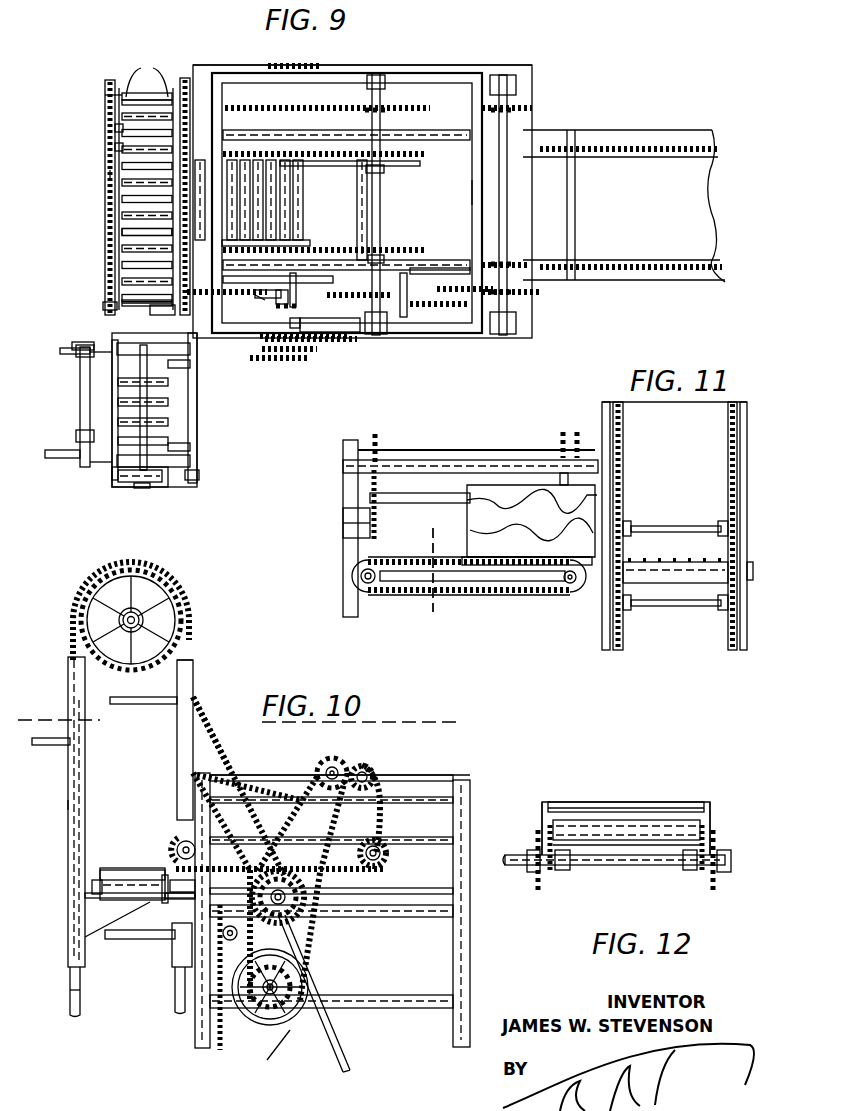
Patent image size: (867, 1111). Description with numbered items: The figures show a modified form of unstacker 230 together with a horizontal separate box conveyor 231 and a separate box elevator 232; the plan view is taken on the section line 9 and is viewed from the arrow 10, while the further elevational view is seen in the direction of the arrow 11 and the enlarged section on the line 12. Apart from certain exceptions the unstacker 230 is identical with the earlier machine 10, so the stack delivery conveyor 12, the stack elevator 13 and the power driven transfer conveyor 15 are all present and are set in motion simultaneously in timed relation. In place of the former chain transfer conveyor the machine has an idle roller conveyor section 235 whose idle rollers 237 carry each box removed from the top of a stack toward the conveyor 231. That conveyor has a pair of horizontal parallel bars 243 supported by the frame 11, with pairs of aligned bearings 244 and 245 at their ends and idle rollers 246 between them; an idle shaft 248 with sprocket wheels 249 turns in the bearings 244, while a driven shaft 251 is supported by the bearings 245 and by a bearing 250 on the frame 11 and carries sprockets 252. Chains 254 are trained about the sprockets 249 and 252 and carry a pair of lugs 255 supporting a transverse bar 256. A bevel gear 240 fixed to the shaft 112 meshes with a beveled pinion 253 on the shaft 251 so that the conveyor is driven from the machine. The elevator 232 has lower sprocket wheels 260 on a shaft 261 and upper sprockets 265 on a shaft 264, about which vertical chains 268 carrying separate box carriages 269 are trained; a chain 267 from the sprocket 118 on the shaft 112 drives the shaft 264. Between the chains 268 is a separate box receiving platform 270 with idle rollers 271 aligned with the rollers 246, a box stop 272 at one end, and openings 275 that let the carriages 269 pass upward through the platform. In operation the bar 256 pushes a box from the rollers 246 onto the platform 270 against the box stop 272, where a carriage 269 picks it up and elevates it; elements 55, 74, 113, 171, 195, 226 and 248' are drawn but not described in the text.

In FIG. 10, the section line 9— 9 is at (38, 717).
In FIG. 9, the unstacker machine 10 is at (272, 497).
In FIG. 9, the frame 11 is at (472, 192).
In FIG. 10, the frame 11 is at (62, 804).
In FIG. 9, the stack delivery conveyor 12 is at (622, 259).
In FIG. 11, the stack delivery conveyor 12 is at (430, 543).
In FIG. 9, the stack elevator 13 is at (386, 248).
In FIG. 10, the stack elevator 13 is at (348, 1041).
In FIG. 9, the transfer conveyor 15 is at (330, 104).
In FIG. 11, the transfer conveyor 15 is at (383, 434).
In FIG. 10, the transfer conveyor 15 is at (384, 866).
In FIG. 9, the bracket 55 is at (437, 268).
In FIG. 10, the supporting bar 74 is at (160, 936).
In FIG. 10, the shaft 112 is at (283, 901).
In FIG. 9, the shaft 113 is at (292, 290).
In FIG. 9, the sprocket 118 is at (300, 360).
In FIG. 10, the sprocket 118 is at (300, 891).
In FIG. 11, the cross bar 171 is at (404, 497).
In FIG. 9, the bearing 195 is at (384, 172).
In FIG. 11, the board 226 is at (600, 508).
In FIG. 9, the unstacker 230 is at (459, 50).
In FIG. 10, the unstacker 230 is at (445, 778).
In FIG. 9, the horizontal separate box conveyor 231 is at (102, 174).
In FIG. 11, the horizontal separate box conveyor 231 is at (520, 594).
In FIG. 9, the separate box elevator 232 is at (62, 404).
In FIG. 11, the separate box elevator 232 is at (626, 447).
In FIG. 10, the separate box elevator 232 is at (195, 673).
In FIG. 9, the idle roller conveyor section 235 is at (306, 201).
In FIG. 9, the idle rollers 237 is at (300, 226).
In FIG. 9, the bevel gear 240 is at (303, 323).
In FIG. 9, the horizontal parallel bars 243 is at (150, 199).
In FIG. 11, the horizontal parallel bars 243 is at (496, 582).
In FIG. 12, the horizontal parallel bars 243 is at (552, 874).
In FIG. 9, the bearings 244 is at (147, 75).
In FIG. 9, the bearings 245 is at (160, 306).
In FIG. 12, the bearings 245 is at (562, 870).
In FIG. 9, the idle rollers 246 is at (130, 232).
In FIG. 12, the idle rollers 246 is at (650, 820).
In FIG. 11, the idle shaft 248 is at (338, 580).
In FIG. 9, the sprocket 248' is at (147, 106).
In FIG. 9, the sprocket wheels 249 is at (106, 95).
In FIG. 11, the sprocket wheels 249 is at (353, 588).
In FIG. 9, the bearing 250 is at (259, 302).
In FIG. 9, the driven shaft 251 is at (143, 300).
In FIG. 11, the driven shaft 251 is at (575, 563).
In FIG. 10, the driven shaft 251 is at (185, 899).
In FIG. 12, the driven shaft 251 is at (615, 849).
In FIG. 9, the sprockets 252 is at (116, 306).
In FIG. 11, the sprockets 252 is at (560, 580).
In FIG. 12, the sprockets 252 is at (530, 875).
In FIG. 9, the beveled pinion 253 is at (288, 299).
In FIG. 9, the chains 254 is at (122, 128).
In FIG. 11, the chains 254 is at (460, 592).
In FIG. 12, the chains 254 is at (536, 832).
In FIG. 11, the lugs 255 is at (467, 566).
In FIG. 12, the lugs 255 is at (542, 804).
In FIG. 9, the transverse bar 256 is at (122, 147).
In FIG. 11, the transverse bar 256 is at (528, 541).
In FIG. 10, the transverse bar 256 is at (130, 870).
In FIG. 12, the transverse bar 256 is at (596, 805).
In FIG. 9, the lower sprocket wheels 260 is at (105, 343).
In FIG. 9, the shaft 261 is at (120, 384).
In FIG. 10, the shaft 264 is at (143, 574).
In FIG. 10, the sprockets 265 is at (194, 604).
In FIG. 9, the chain 267 is at (253, 360).
In FIG. 10, the chain 267 is at (230, 760).
In FIG. 9, the vertical chains 268 is at (72, 346).
In FIG. 10, the vertical chains 268 is at (191, 637).
In FIG. 11, the separate box carriages 269 is at (674, 527).
In FIG. 10, the separate box carriages 269 is at (134, 704).
In FIG. 9, the separate box receiving platform 270 is at (110, 419).
In FIG. 11, the separate box receiving platform 270 is at (672, 563).
In FIG. 10, the separate box receiving platform 270 is at (100, 887).
In FIG. 9, the idle rollers 271 is at (162, 422).
In FIG. 10, the idle rollers 271 is at (115, 878).
In FIG. 9, the box stop 272 is at (142, 487).
In FIG. 11, the box stop 272 is at (750, 562).
In FIG. 9, the openings 275 is at (190, 360).